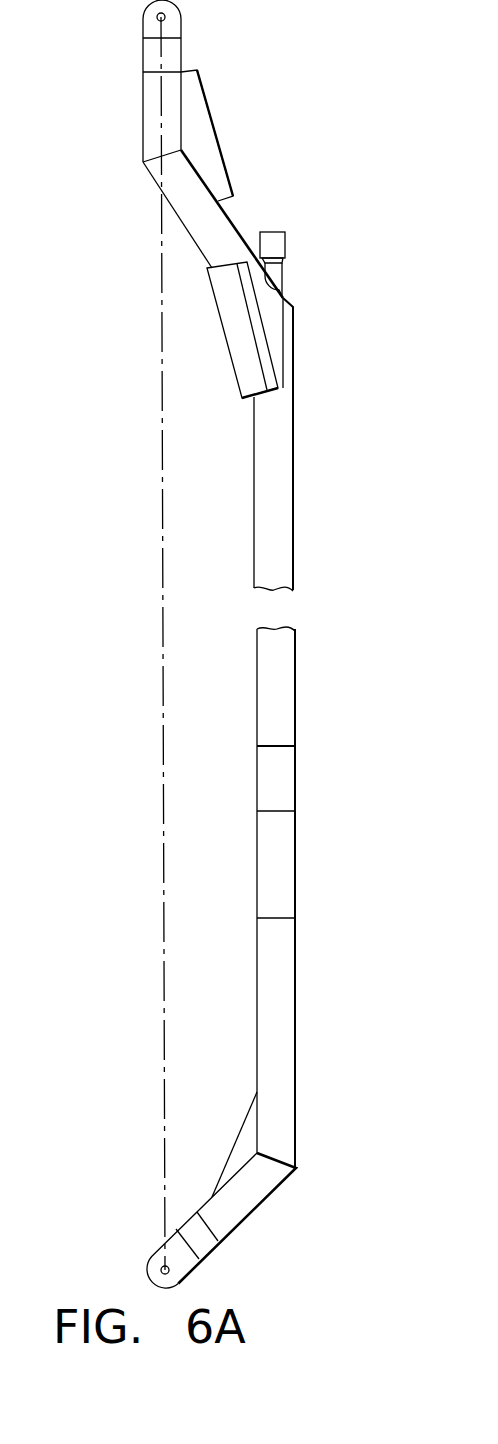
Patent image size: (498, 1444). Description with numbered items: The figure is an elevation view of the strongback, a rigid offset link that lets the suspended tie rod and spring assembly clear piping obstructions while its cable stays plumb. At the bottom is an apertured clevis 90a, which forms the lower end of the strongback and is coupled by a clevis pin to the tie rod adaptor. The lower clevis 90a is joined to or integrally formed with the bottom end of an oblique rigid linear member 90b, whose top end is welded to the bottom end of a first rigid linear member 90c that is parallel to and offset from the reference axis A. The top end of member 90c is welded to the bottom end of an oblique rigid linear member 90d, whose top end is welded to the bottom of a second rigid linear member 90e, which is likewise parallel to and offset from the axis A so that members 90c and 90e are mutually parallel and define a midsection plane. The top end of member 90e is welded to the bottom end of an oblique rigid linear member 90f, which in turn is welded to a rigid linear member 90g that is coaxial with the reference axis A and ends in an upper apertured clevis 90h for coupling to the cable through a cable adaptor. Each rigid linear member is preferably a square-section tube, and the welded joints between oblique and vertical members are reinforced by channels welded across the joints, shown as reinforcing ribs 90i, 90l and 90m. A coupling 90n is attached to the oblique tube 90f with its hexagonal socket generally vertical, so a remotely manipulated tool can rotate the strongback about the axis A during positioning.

The apertured clevis 90a is at (155, 1251).
The oblique rigid linear member 90b is at (252, 1213).
The first rigid linear member 90c is at (296, 1002).
The oblique rigid linear member 90d is at (257, 788).
The second rigid linear member 90e is at (293, 521).
The oblique rigid linear member 90f is at (188, 232).
The rigid linear member 90g is at (142, 102).
The apertured clevis 90h is at (182, 15).
The reinforcing rib 90i is at (233, 1143).
The reinforcing rib 90l is at (227, 348).
The reinforcing rib 90m is at (220, 142).
The coupling 90n is at (275, 245).
The reference axis A is at (163, 572).